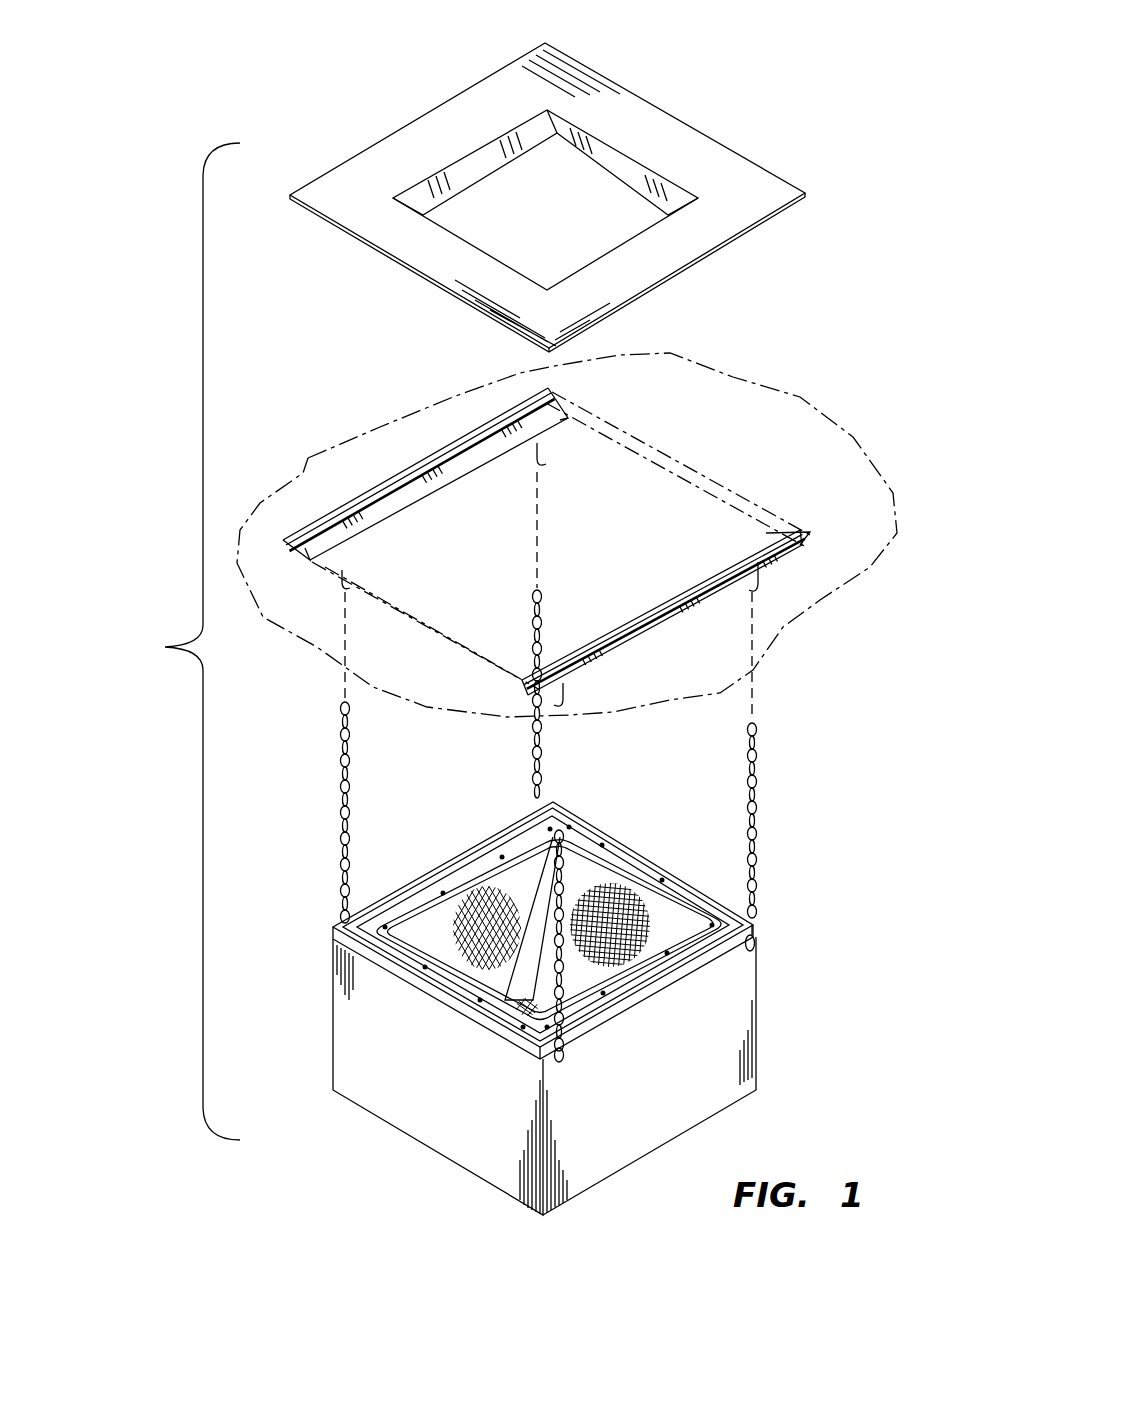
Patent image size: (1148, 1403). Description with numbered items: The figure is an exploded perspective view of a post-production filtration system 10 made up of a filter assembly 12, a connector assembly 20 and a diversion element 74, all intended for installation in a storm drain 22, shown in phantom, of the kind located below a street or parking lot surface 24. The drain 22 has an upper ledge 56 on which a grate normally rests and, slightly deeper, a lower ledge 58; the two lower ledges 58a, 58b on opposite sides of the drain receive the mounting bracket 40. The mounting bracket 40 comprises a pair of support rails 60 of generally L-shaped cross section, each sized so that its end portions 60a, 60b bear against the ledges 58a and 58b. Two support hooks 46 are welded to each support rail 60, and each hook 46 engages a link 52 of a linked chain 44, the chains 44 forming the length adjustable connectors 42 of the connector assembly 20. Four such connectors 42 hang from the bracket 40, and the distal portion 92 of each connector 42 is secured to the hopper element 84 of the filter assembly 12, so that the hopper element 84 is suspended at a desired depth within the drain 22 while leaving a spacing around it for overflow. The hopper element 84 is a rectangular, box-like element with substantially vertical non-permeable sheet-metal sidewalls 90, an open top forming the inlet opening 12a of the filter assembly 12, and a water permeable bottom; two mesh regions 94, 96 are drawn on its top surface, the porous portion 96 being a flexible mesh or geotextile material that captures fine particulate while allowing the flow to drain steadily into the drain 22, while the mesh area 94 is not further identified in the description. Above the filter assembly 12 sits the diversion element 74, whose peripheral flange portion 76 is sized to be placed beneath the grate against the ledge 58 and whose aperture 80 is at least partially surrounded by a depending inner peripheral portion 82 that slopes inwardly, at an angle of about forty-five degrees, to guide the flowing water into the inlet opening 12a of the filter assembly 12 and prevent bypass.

The post-production filtration system 10 is at (163, 683).
The filter assembly 12 is at (602, 999).
The inlet opening 12a is at (549, 907).
The connector assembly 20 is at (566, 747).
The storm drain 22 is at (559, 501).
The street or parking lot surface 24 is at (778, 455).
The mounting bracket 40 is at (513, 515).
The connector 42 is at (562, 747).
The linked chain 44 is at (542, 761).
The support hook 46 is at (537, 455).
The link 52 is at (752, 727).
The upper ledge 56 is at (765, 512).
The lower ledge 58 is at (684, 490).
The lower ledge 58a is at (597, 436).
The lower ledge 58b is at (412, 615).
The support rail 60 is at (407, 505).
The end portion 60a is at (548, 388).
The end portion 60b is at (330, 545).
The diversion element 74 is at (552, 193).
The peripheral flange portion 76 is at (636, 112).
The aperture 80 is at (512, 183).
The depending inner peripheral portion 82 is at (452, 183).
The hopper element 84 is at (589, 1008).
The sidewalls 90 is at (418, 1108).
The distal portion 92 is at (755, 945).
The mesh screen 94 is at (468, 893).
The porous portion 96 is at (665, 915).